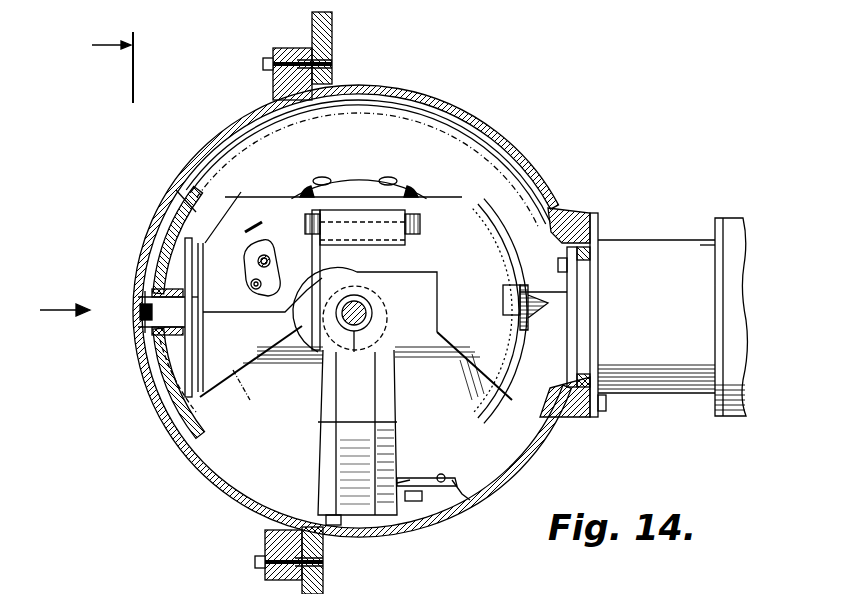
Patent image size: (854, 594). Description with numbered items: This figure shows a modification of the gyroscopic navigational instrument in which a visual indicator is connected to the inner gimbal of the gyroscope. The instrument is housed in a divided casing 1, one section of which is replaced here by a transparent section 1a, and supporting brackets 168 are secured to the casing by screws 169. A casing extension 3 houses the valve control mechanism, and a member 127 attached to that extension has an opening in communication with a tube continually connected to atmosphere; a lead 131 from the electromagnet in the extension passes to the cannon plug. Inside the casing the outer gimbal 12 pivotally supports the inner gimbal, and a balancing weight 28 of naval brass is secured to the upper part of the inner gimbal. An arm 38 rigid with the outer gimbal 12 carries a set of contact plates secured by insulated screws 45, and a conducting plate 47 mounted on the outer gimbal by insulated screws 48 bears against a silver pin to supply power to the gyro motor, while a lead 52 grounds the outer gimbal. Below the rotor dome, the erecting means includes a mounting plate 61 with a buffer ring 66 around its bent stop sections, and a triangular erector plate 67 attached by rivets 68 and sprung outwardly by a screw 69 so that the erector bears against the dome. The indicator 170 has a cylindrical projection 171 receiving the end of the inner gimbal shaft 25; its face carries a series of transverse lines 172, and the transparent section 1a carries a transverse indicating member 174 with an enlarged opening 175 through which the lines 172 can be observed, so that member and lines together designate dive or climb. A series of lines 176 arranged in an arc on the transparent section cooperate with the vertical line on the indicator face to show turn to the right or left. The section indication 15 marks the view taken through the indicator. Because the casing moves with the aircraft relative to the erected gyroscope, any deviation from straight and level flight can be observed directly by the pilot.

The divided casing 1 is at (489, 129).
The transparent section 1a is at (228, 132).
The casing extension 3 is at (660, 240).
The outer gimbal 12 is at (461, 200).
The section line indicator 15 is at (86, 173).
The shaft 25 is at (160, 298).
The balancing weight 28 is at (361, 181).
The arm 38 is at (250, 272).
The insulated screws 45 is at (263, 290).
The conducting plate 47 is at (548, 311).
The insulated screws 48 is at (540, 292).
The lead 52 is at (270, 212).
The mounting plate 61 is at (420, 495).
The buffer ring 66 is at (456, 490).
The triangular erector plate 67 is at (412, 478).
The rivets 68 is at (444, 476).
The screw 69 is at (413, 501).
The member 127 is at (738, 218).
The lead 131 is at (558, 264).
The supporting brackets 168 is at (332, 37).
The screws 169 is at (263, 63).
The indicator 170 is at (206, 198).
The cylindrical projection 171 is at (165, 292).
The transverse lines 172 is at (200, 408).
The transverse indicating member 174 is at (140, 314).
The enlarged opening 175 is at (165, 330).
The lines 176 is at (196, 197).